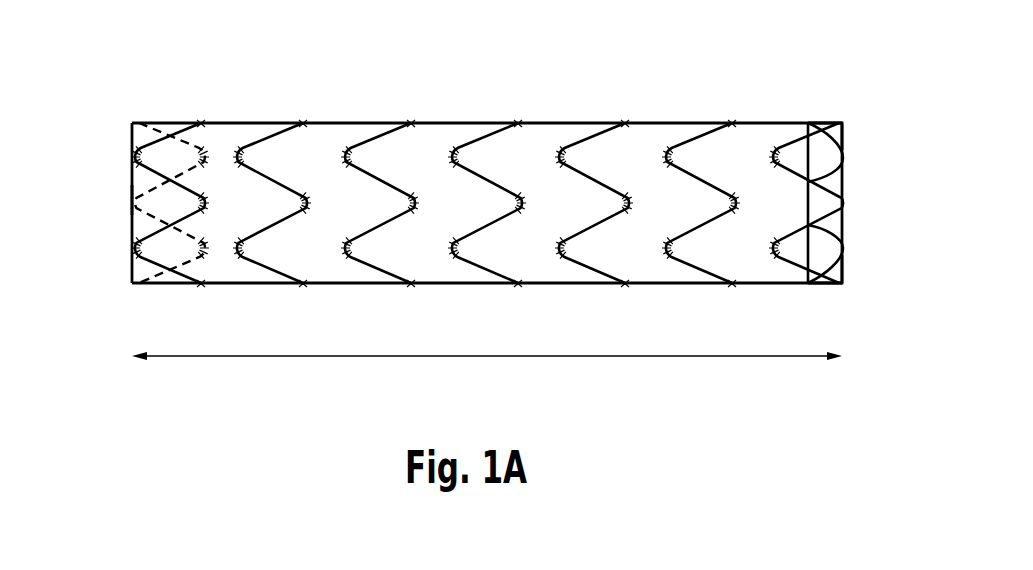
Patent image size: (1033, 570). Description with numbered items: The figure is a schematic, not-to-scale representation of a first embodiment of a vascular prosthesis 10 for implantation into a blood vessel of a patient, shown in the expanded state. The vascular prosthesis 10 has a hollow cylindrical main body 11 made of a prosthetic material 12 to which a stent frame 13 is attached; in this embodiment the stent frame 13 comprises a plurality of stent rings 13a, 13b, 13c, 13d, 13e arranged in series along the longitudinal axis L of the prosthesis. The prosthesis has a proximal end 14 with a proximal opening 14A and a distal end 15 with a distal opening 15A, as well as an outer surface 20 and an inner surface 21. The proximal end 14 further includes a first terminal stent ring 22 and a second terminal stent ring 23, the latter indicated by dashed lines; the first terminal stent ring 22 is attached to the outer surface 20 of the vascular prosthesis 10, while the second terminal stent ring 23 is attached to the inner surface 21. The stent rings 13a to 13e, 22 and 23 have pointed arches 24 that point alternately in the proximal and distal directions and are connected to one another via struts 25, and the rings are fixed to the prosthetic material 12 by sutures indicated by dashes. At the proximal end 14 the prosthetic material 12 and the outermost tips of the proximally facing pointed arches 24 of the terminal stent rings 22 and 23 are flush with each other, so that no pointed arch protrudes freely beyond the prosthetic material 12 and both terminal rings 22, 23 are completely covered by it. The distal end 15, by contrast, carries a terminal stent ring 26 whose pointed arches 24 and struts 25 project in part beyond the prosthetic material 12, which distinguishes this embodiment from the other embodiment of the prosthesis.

The vascular prosthesis 10 is at (476, 90).
The main body 11 is at (689, 202).
The prosthetic material 12 is at (582, 202).
The stent frame 13 is at (365, 202).
The stent ring 13a is at (266, 275).
The stent ring 13b is at (373, 275).
The stent ring 13c is at (480, 275).
The stent ring 13d is at (585, 275).
The stent ring 13e is at (690, 275).
The proximal end 14 is at (117, 157).
The proximal opening 14A is at (117, 200).
The distal end 15 is at (860, 157).
The distal opening 15A is at (858, 170).
The outer surface 20 is at (380, 202).
The inner surface 21 is at (801, 148).
The first terminal stent ring 22 is at (190, 188).
The second terminal stent ring 23 is at (150, 215).
The pointed arches 24 is at (845, 138).
The struts 25 is at (845, 283).
The terminal stent ring 26 is at (845, 308).
The longitudinal axis L is at (487, 369).